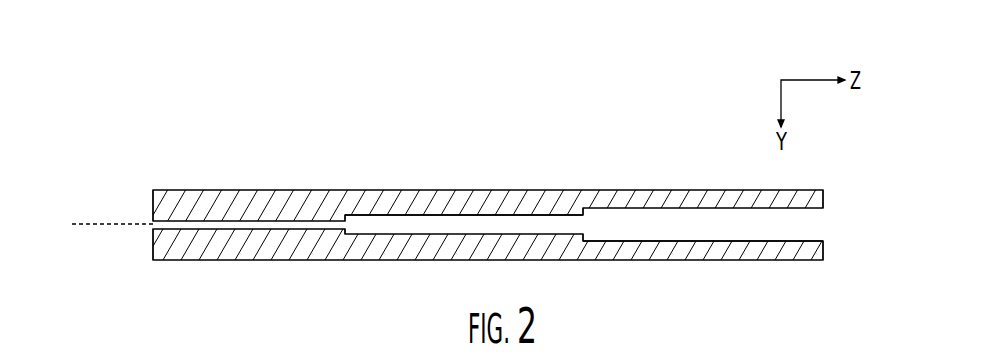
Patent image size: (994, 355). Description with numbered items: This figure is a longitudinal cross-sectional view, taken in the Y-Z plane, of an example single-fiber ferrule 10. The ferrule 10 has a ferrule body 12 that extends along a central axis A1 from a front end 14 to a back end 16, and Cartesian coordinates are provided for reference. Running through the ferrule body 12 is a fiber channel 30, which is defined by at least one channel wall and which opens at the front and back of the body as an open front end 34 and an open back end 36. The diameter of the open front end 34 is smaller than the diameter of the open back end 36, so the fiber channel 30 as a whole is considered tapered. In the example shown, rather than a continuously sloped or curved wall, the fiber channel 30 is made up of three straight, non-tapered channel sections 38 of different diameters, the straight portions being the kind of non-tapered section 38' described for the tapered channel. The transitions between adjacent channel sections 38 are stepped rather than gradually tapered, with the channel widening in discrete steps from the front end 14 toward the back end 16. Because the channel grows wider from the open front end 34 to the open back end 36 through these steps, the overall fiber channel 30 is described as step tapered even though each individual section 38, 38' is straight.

The single-fiber ferrule 10 is at (256, 168).
The ferrule body 12 is at (525, 198).
The front end 14 is at (153, 200).
The back end 16 is at (823, 193).
The fiber channel 30 is at (430, 199).
The open front end of fiber channel 34 is at (153, 229).
The open back end of fiber channel 36 is at (805, 222).
The channel section 38 is at (380, 189).
The straight channel section 38' is at (666, 192).
The central axis A1 is at (112, 223).